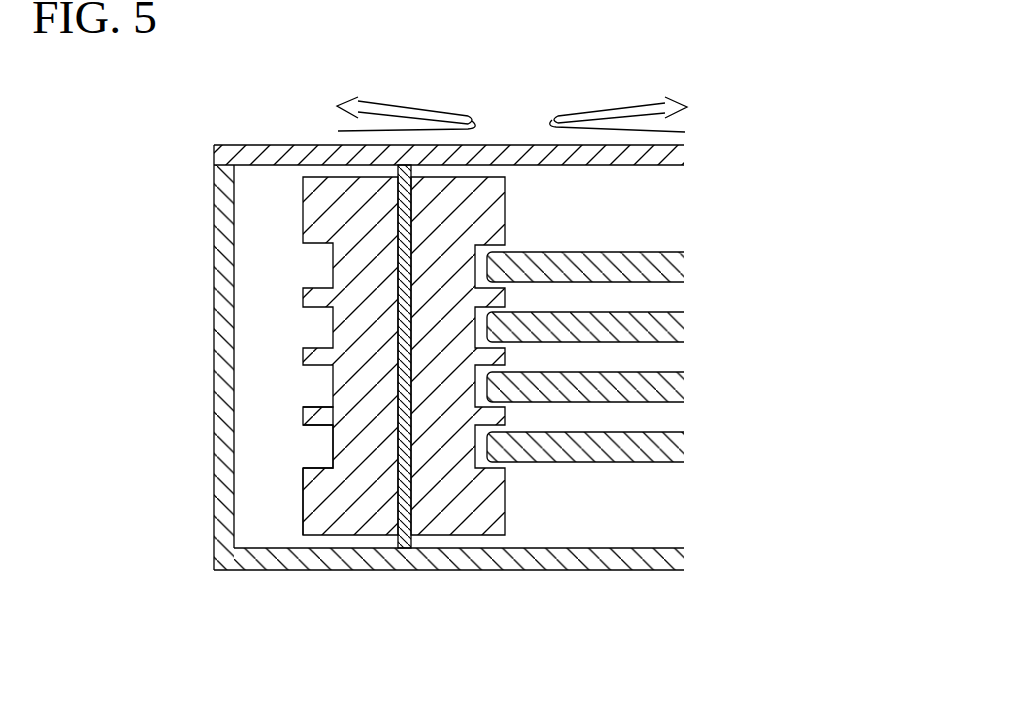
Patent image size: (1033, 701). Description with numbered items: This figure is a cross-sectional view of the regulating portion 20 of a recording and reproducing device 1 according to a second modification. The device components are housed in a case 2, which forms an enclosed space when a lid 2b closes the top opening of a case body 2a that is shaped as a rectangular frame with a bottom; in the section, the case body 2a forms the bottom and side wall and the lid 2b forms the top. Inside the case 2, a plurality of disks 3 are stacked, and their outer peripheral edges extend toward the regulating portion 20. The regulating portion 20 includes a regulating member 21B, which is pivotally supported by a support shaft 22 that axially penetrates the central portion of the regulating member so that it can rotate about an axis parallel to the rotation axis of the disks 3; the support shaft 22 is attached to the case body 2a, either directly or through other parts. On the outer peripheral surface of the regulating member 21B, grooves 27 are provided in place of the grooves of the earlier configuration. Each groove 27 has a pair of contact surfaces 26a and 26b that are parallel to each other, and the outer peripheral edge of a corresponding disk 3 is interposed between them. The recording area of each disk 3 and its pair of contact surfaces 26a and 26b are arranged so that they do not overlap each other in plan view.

The recording and reproducing device 1 is at (102, 121).
The case 2 is at (387, 358).
The case body 2a is at (537, 571).
The lid 2b is at (518, 145).
The disk 3 is at (590, 473).
The regulating portion 20 is at (457, 548).
The regulating member 21B is at (306, 500).
The support shaft 22 is at (399, 540).
The contact surface 26a is at (313, 468).
The contact surface 26b is at (312, 430).
The groove 27 is at (306, 448).